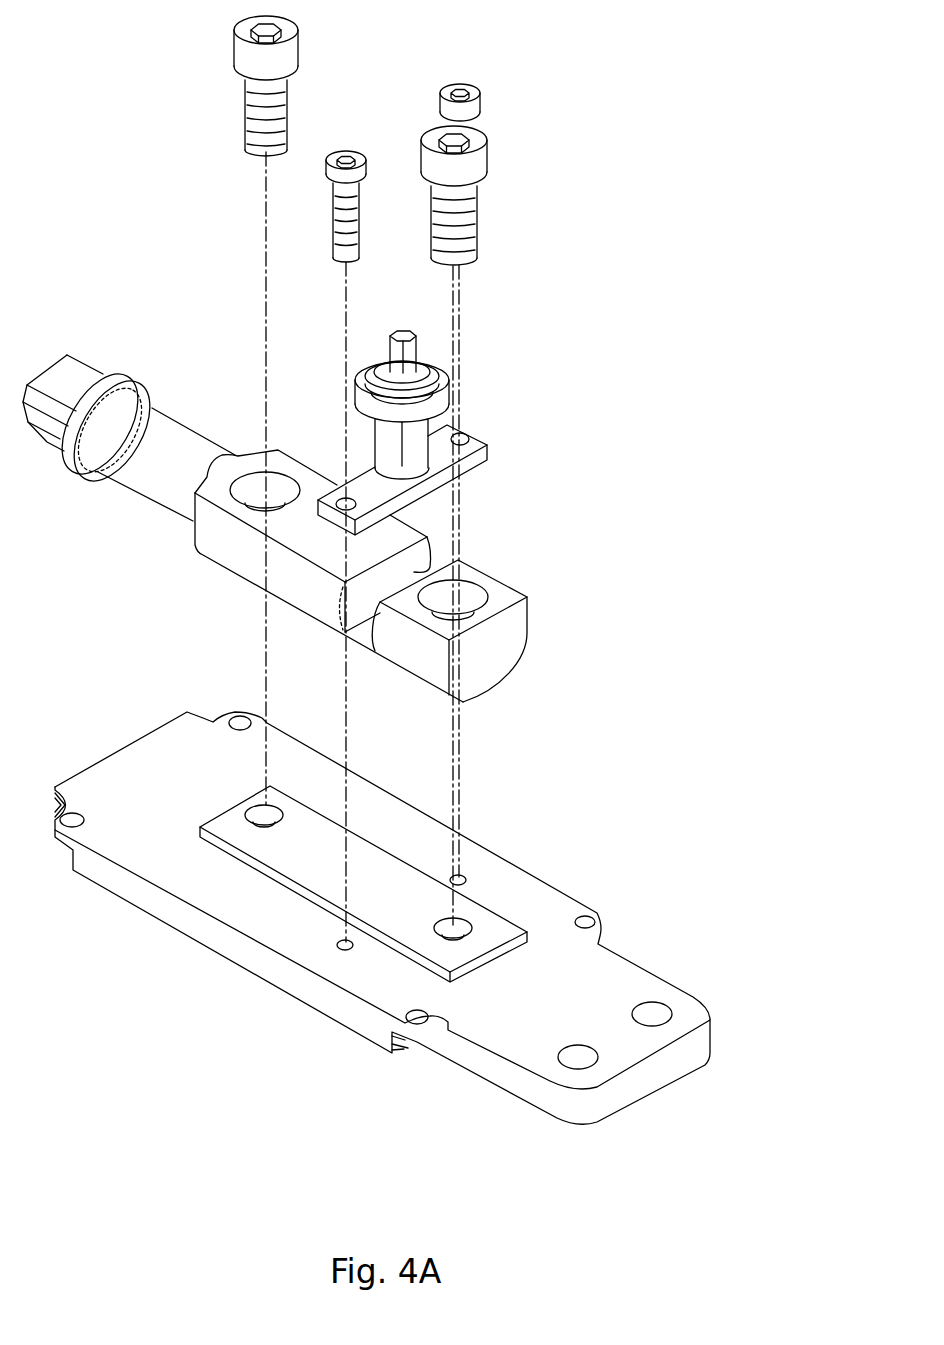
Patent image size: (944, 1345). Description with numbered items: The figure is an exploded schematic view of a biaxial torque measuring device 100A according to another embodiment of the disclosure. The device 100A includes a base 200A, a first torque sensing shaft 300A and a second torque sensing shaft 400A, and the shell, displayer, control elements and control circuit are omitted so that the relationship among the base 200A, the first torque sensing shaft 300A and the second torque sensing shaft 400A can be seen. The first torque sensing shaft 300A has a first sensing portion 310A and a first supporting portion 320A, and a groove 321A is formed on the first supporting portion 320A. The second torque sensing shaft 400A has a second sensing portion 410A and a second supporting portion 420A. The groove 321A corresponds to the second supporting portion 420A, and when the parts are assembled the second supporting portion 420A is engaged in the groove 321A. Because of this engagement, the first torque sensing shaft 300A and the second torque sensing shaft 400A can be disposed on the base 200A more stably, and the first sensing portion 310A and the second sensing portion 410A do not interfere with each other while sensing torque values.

The biaxial torque measuring device 100A is at (117, 48).
The base 200A is at (640, 990).
The first torque sensing shaft 300A is at (186, 440).
The first sensing portion 310A is at (65, 372).
The first supporting portion 320A is at (505, 642).
The groove 321A is at (416, 568).
The second torque sensing shaft 400A is at (430, 432).
The second sensing portion 410A is at (410, 355).
The second supporting portion 420A is at (477, 456).